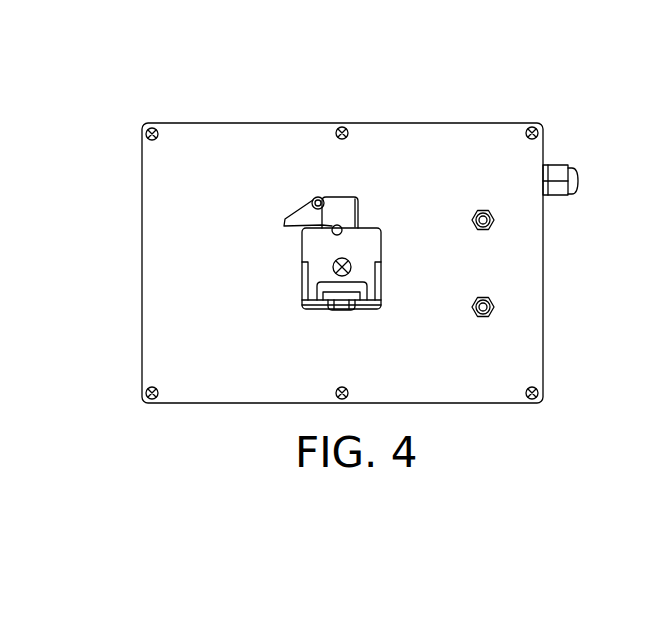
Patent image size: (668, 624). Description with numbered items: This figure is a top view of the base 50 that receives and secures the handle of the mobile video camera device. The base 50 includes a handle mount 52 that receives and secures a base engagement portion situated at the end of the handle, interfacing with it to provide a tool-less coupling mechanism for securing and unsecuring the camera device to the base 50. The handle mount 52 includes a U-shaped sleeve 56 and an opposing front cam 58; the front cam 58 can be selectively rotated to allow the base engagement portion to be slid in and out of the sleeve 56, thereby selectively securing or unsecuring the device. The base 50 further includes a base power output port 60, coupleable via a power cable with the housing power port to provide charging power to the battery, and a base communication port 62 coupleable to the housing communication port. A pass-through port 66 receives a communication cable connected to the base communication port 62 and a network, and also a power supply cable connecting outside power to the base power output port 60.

The base 50 is at (438, 67).
The handle mount 52 is at (310, 252).
The U-shaped sleeve 56 is at (306, 303).
The front cam 58 is at (343, 205).
The base power output port 60 is at (485, 319).
The base communication port 62 is at (485, 208).
The pass-through port 66 is at (561, 176).